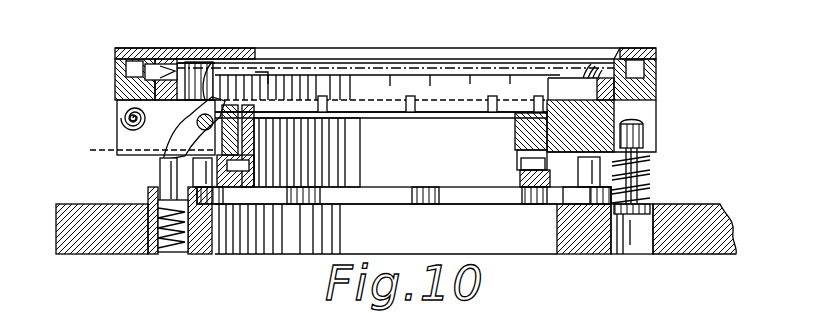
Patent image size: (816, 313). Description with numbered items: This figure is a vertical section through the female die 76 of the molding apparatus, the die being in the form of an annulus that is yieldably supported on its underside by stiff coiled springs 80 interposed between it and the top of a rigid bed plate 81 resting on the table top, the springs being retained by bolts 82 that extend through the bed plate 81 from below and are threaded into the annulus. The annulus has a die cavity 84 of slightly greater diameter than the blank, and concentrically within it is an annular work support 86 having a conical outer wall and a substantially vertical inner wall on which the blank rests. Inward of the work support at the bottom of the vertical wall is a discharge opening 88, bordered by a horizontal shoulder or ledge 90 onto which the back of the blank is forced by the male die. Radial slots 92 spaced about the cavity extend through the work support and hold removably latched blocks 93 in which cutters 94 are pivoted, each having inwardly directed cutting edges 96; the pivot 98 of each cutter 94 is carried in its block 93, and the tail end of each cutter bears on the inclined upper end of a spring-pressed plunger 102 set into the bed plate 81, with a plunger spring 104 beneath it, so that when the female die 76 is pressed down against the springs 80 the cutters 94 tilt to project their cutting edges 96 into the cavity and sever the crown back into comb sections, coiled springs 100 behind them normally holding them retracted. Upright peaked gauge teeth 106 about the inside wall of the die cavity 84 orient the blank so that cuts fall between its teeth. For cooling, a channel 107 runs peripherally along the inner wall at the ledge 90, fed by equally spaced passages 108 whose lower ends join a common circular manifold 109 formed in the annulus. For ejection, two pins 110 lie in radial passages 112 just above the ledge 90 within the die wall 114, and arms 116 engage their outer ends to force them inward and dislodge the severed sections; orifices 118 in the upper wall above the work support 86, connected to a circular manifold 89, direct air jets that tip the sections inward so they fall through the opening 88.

The female die 76 is at (506, 42).
The coiled springs 80 is at (647, 170).
The bed plate 81 is at (79, 254).
The bolts 82 is at (642, 202).
The die cavity 84 is at (193, 41).
The annular work support 86 is at (560, 78).
The discharge opening 88 is at (322, 152).
The circular manifold 89 is at (127, 69).
The shoulder or ledge 90 is at (522, 112).
The radial slots 92 is at (117, 115).
The blocks 93 is at (117, 147).
The cutters 94 is at (145, 156).
The cutting edges 96 is at (208, 108).
The pivot pin 98 is at (232, 112).
The coiled springs 100 is at (123, 122).
The spring-pressed plunger 102 is at (165, 172).
The compression spring 104 is at (153, 226).
The gauge teeth 106 is at (590, 75).
The channel 107 is at (385, 111).
The passages 108 is at (517, 150).
The circular manifold 109 is at (518, 173).
The pins 110 is at (658, 72).
The radial passages 112 is at (542, 92).
The end wall 114 is at (657, 81).
The arms 116 is at (641, 117).
The orifices 118 is at (656, 60).